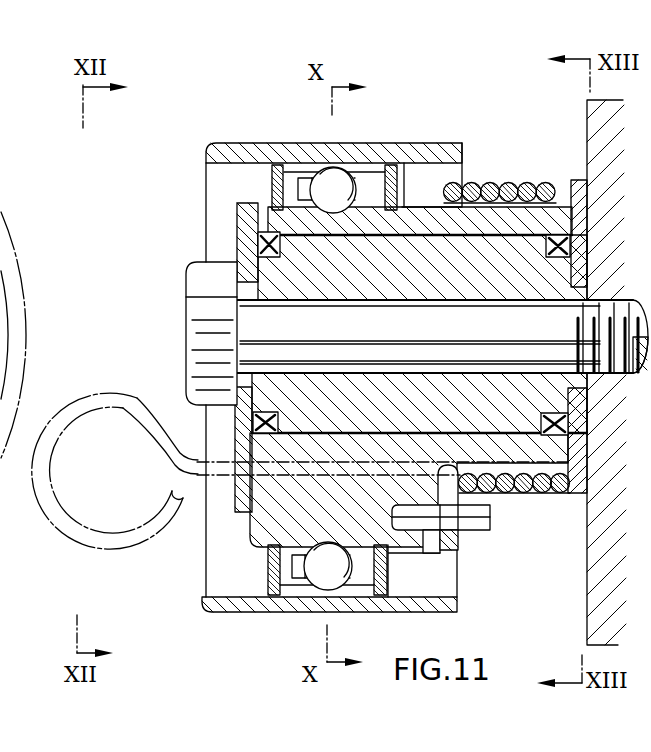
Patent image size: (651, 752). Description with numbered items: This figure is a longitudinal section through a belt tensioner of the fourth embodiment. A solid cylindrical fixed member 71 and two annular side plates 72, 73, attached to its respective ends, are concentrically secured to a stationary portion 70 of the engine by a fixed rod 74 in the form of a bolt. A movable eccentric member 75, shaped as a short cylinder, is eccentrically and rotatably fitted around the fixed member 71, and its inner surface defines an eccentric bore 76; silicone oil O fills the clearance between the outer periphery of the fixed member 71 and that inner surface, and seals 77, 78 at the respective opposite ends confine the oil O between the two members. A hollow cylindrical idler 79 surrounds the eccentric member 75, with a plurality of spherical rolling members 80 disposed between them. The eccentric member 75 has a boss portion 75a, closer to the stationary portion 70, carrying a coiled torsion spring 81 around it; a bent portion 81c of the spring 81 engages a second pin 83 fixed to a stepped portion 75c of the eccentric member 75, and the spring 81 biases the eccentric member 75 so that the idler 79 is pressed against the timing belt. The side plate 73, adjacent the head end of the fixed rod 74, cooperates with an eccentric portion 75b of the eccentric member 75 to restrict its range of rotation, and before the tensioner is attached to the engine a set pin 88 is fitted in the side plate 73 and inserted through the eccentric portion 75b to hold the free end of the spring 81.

The stationary portion 70 is at (585, 592).
The fixed member 71 is at (272, 290).
The side plate 72 is at (582, 178).
The side plate 73 is at (243, 213).
The fixed rod 74 is at (190, 343).
The eccentric member 75 is at (257, 527).
The boss portion 75a is at (440, 205).
The eccentric portion 75b is at (252, 548).
The stepped portion 75c is at (465, 490).
The eccentric bore 76 is at (497, 415).
The seal 77 is at (558, 230).
The seal 78 is at (265, 243).
The idler 79 is at (228, 606).
The spherical rolling members 80 is at (327, 175).
The coiled torsion spring 81 is at (472, 178).
The bent portion 81c is at (447, 553).
The second pin 83 is at (477, 528).
The set pin 88 is at (118, 548).
The silicone oil O is at (404, 165).